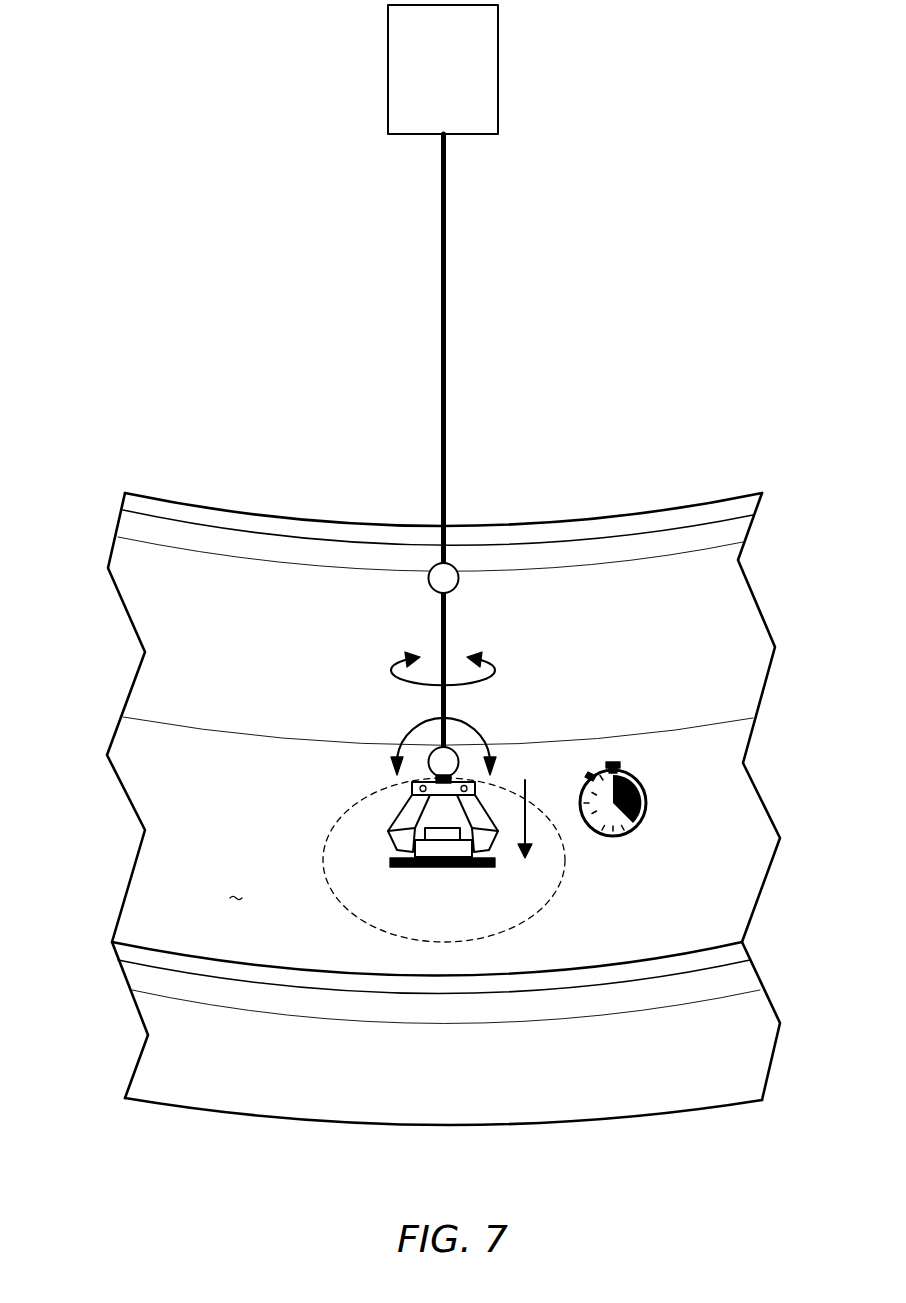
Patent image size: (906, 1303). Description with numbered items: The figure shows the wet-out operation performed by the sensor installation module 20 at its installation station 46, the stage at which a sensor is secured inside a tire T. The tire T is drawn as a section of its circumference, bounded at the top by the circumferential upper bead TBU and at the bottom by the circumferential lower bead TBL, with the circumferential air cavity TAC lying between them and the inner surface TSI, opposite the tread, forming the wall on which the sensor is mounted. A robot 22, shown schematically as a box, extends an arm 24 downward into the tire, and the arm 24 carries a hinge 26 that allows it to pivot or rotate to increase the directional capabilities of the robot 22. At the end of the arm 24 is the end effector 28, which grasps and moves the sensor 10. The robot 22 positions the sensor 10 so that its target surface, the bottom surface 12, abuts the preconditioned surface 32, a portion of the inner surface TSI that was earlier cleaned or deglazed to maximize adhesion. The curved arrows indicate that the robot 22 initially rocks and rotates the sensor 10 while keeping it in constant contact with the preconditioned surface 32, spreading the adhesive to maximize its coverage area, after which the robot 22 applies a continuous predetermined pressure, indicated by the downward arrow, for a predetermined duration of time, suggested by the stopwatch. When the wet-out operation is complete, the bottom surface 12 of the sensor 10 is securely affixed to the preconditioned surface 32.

The sensor 10 is at (426, 849).
The bottom surface 12 is at (425, 868).
The sensor installation module 20 is at (208, 76).
The robot 22 is at (505, 32).
The arm 24 is at (446, 372).
The hinge 26 is at (458, 585).
The end effector 28 is at (485, 800).
The preconditioned surface 32 is at (565, 872).
The installation station 46 is at (226, 283).
The tire T is at (408, 803).
The upper bead TBU is at (182, 500).
The air cavity TAC is at (180, 806).
The lower bead TBL is at (150, 944).
The inner surface TSI is at (235, 881).